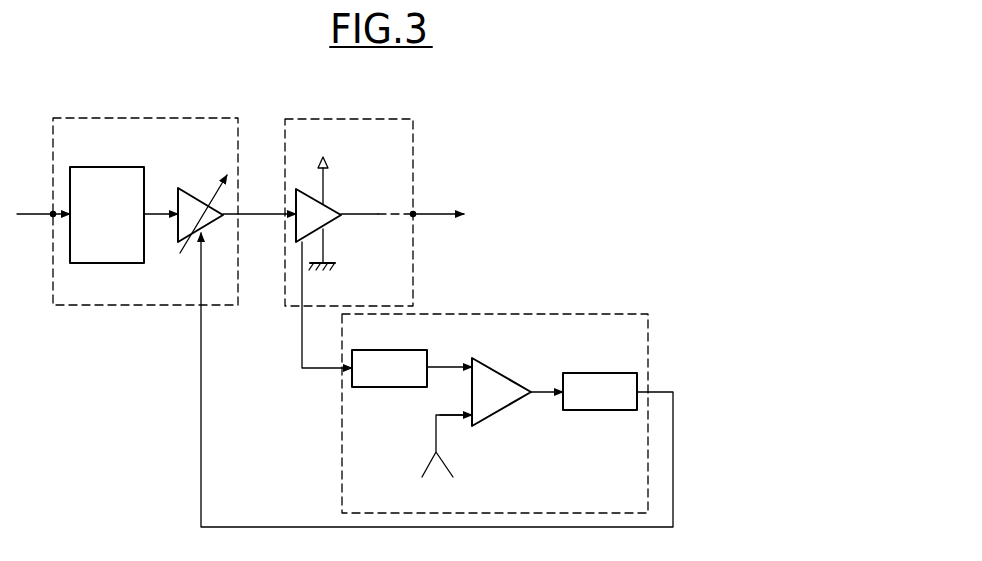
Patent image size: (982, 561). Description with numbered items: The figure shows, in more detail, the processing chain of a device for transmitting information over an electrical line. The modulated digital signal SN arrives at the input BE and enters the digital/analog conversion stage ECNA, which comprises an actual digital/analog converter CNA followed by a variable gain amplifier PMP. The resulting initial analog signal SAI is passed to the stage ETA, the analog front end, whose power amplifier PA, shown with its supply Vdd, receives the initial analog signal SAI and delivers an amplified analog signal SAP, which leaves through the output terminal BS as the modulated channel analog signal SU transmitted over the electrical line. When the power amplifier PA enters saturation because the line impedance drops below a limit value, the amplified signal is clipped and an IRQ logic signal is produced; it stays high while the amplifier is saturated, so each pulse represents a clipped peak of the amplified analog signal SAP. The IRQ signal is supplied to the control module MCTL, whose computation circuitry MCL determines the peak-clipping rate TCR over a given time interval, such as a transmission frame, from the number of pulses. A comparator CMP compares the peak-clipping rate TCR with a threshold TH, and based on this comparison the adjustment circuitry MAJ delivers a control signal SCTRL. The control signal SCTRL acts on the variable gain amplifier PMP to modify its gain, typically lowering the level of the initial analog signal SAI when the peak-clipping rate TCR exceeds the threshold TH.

The digital/analog conversion stage ECNA is at (147, 118).
The stage ETA is at (350, 118).
The control module MCTL is at (497, 314).
The digital signal SN is at (23, 211).
The input BE is at (50, 218).
The digital/analog converter CNA is at (107, 215).
The variable gain amplifier PMP is at (193, 188).
The initial analog signal SAI is at (262, 212).
The power amplifier PA is at (331, 204).
The supply voltage Vdd is at (327, 168).
The amplified analog signal SAP is at (375, 218).
The output terminal BS is at (415, 218).
The channel analog signal SU is at (440, 212).
The control signal SCTRL is at (200, 378).
The IRQ logic signal IRQ is at (298, 348).
The computation circuitry MCL is at (389, 368).
The peak-clipping rate TCR is at (450, 366).
The threshold TH is at (447, 459).
The comparator CMP is at (505, 366).
The adjustment circuitry MAJ is at (600, 391).